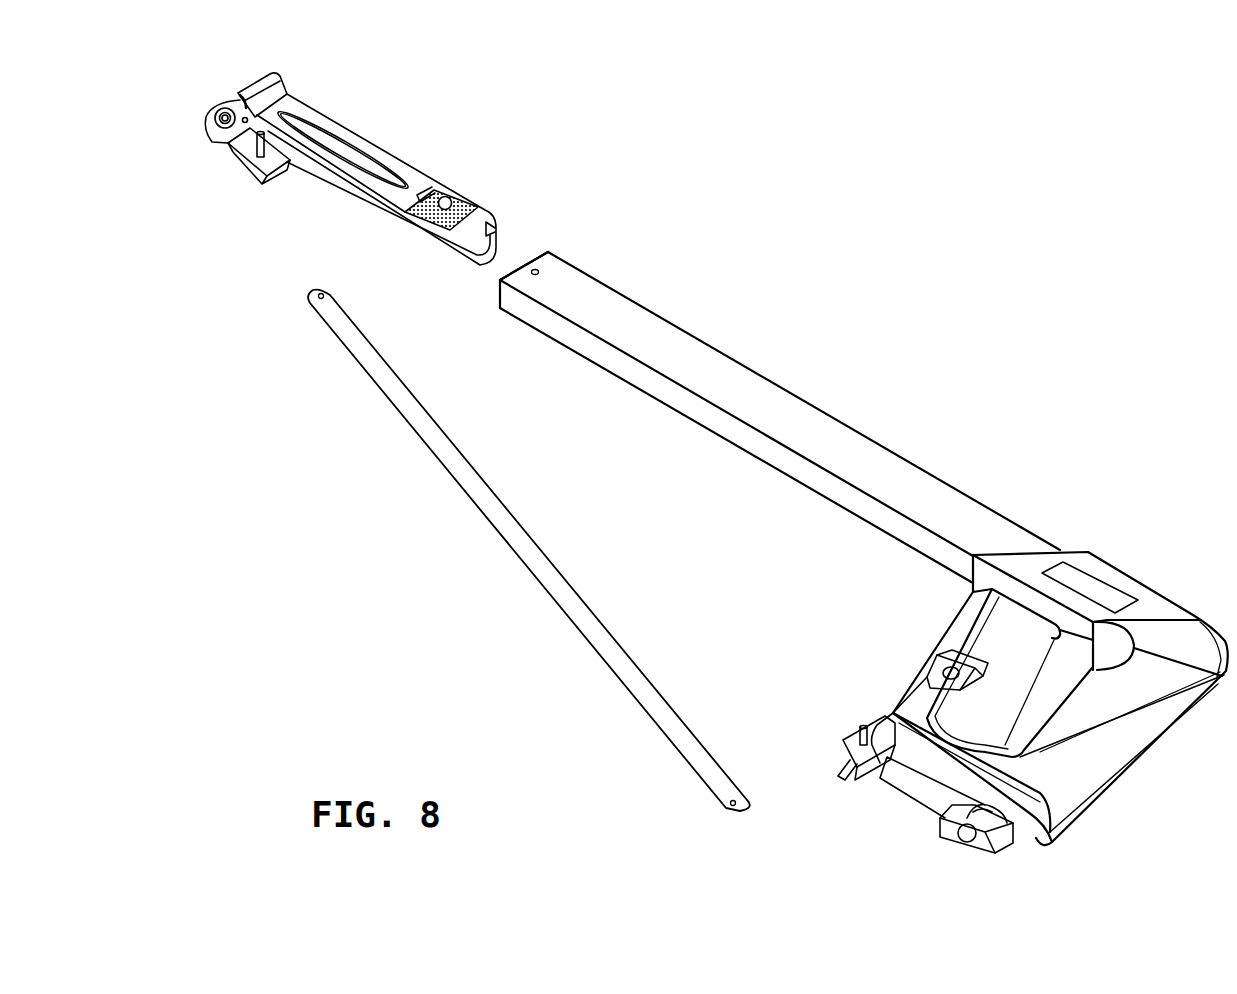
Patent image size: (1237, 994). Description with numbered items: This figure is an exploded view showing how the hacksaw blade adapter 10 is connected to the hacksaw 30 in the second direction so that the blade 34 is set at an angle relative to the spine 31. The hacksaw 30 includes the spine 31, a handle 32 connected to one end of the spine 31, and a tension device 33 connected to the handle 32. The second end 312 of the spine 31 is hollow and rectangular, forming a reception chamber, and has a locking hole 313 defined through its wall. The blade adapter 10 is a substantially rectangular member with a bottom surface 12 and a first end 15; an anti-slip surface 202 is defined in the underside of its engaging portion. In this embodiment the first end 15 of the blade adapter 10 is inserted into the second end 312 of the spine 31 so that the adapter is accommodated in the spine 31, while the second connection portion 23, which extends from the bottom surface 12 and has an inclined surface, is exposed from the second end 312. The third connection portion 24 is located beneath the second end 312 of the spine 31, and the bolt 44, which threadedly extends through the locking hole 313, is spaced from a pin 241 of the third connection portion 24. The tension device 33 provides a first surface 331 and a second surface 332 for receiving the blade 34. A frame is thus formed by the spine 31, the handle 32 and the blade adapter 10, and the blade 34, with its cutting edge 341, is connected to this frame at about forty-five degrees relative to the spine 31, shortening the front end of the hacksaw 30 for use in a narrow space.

The hacksaw blade adapter 10 is at (324, 177).
The bottom surface 12 is at (413, 177).
The first end 15 is at (470, 240).
The second connection portion 23 is at (255, 78).
The third connection portion 24 is at (275, 157).
The bolt 44 is at (218, 112).
The pin 241 is at (232, 157).
The anti-slip surface 202 is at (405, 213).
The hacksaw 30 is at (768, 518).
The spine 31 is at (780, 383).
The second end 312 is at (560, 255).
The locking hole 313 is at (537, 275).
The handle 32 is at (1108, 700).
The tension device 33 is at (883, 739).
The first surface 331 is at (875, 722).
The second surface 332 is at (850, 762).
The blade 34 is at (529, 550).
The cutting edge 341 is at (514, 547).